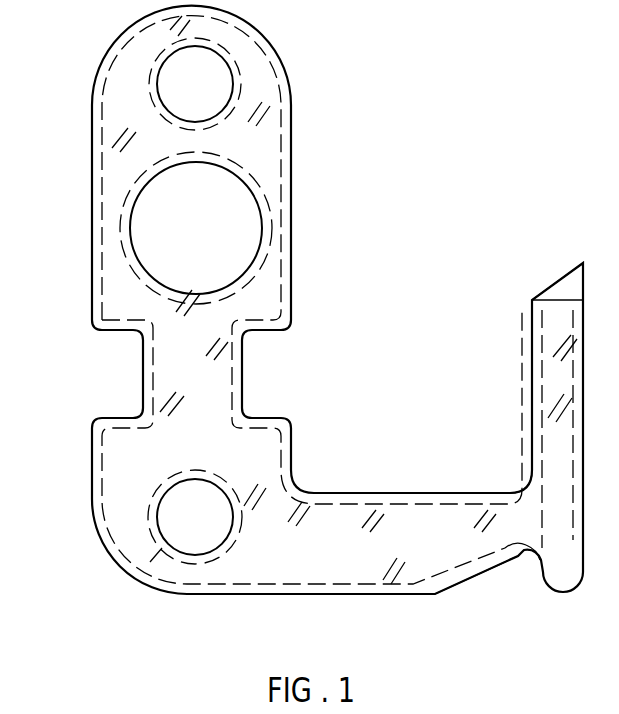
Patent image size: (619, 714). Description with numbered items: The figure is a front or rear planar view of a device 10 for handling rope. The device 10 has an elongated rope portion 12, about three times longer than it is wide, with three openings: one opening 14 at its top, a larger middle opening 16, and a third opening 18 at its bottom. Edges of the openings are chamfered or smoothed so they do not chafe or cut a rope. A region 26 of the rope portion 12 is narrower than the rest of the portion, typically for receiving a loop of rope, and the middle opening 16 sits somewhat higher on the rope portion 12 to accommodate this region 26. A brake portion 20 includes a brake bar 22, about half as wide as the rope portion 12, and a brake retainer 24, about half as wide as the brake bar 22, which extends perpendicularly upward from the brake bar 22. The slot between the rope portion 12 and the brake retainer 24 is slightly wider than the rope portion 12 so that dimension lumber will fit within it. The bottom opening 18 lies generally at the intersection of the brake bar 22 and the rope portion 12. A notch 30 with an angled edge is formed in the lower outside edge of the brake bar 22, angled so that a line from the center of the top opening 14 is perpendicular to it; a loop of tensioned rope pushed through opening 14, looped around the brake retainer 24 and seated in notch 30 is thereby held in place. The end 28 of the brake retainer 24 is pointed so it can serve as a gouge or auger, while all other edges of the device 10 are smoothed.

The device 10 is at (323, 325).
The rope portion 12 is at (268, 158).
The opening 14 is at (210, 74).
The middle opening 16 is at (246, 226).
The opening 18 is at (222, 520).
The brake portion 20 is at (486, 447).
The brake bar 22 is at (423, 493).
The brake retainer 24 is at (532, 392).
The region 26 is at (277, 378).
The end 28 is at (552, 285).
The notch 30 is at (480, 573).